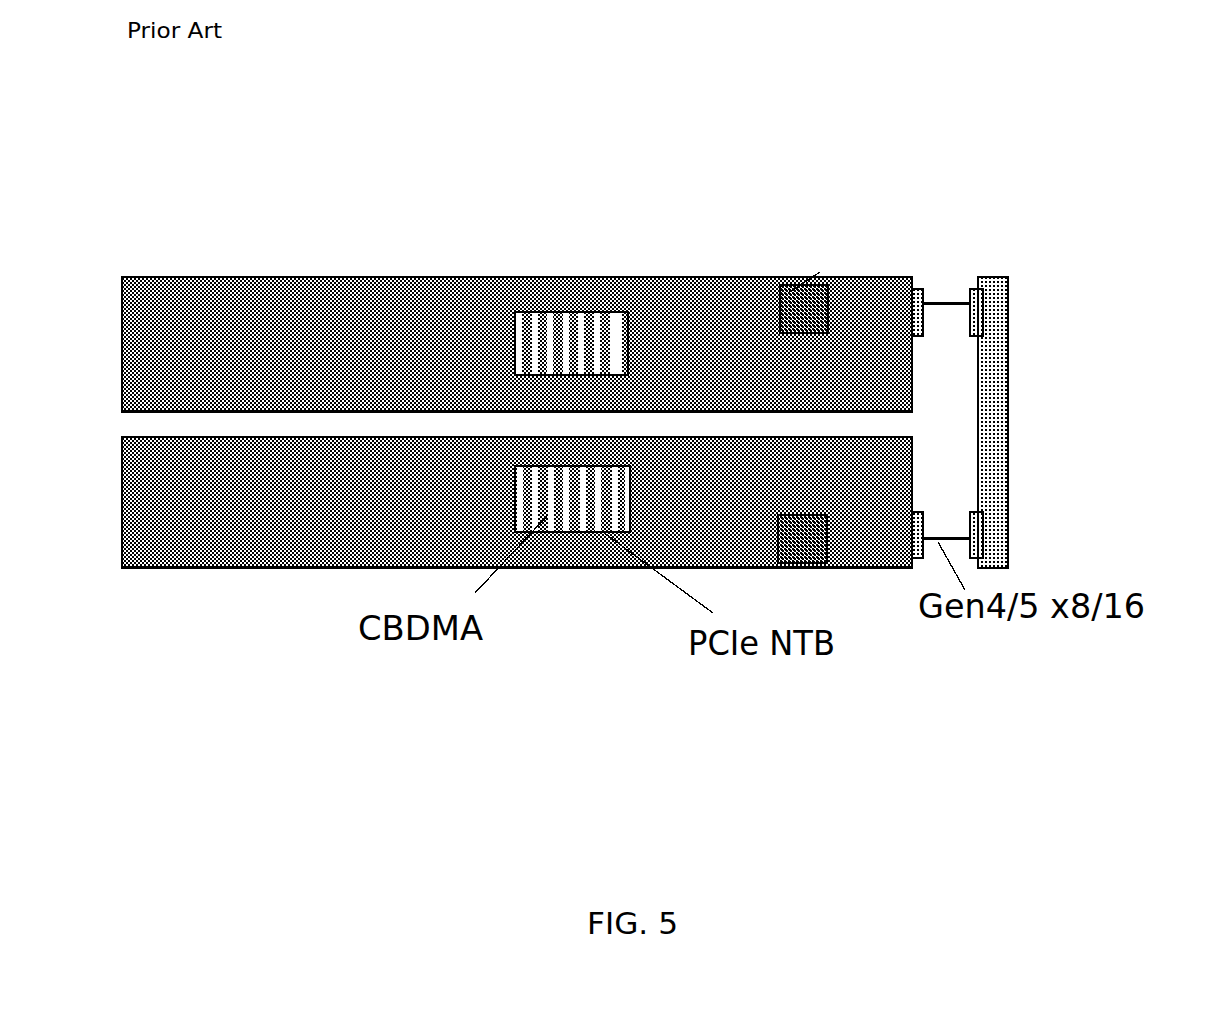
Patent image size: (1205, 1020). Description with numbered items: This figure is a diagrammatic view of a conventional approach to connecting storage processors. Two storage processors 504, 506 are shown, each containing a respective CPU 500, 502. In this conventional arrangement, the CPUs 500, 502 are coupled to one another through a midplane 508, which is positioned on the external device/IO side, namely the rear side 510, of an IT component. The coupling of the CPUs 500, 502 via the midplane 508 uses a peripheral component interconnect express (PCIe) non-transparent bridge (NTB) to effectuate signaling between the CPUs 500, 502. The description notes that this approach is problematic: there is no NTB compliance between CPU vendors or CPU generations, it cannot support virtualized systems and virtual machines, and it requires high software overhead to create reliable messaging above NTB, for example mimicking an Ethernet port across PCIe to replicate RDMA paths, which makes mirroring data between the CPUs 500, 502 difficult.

The CPU 500 is at (512, 362).
The CPU 502 is at (512, 514).
The storage processor 504 is at (496, 321).
The storage processor 506 is at (496, 484).
The midplane 508 is at (1005, 292).
The rear side 510 is at (1068, 314).